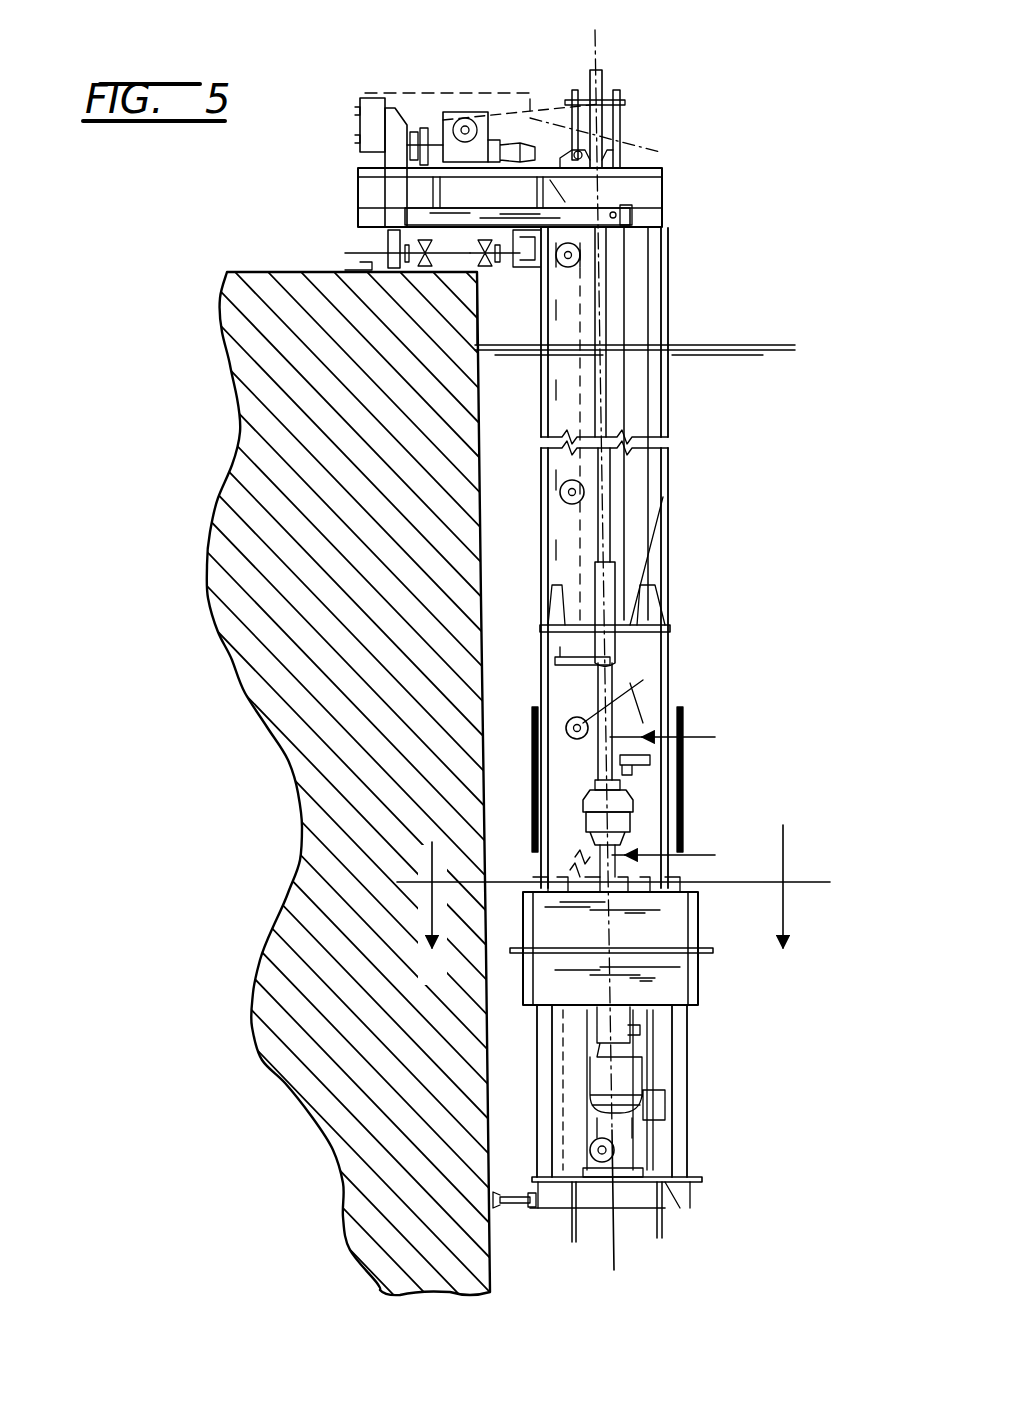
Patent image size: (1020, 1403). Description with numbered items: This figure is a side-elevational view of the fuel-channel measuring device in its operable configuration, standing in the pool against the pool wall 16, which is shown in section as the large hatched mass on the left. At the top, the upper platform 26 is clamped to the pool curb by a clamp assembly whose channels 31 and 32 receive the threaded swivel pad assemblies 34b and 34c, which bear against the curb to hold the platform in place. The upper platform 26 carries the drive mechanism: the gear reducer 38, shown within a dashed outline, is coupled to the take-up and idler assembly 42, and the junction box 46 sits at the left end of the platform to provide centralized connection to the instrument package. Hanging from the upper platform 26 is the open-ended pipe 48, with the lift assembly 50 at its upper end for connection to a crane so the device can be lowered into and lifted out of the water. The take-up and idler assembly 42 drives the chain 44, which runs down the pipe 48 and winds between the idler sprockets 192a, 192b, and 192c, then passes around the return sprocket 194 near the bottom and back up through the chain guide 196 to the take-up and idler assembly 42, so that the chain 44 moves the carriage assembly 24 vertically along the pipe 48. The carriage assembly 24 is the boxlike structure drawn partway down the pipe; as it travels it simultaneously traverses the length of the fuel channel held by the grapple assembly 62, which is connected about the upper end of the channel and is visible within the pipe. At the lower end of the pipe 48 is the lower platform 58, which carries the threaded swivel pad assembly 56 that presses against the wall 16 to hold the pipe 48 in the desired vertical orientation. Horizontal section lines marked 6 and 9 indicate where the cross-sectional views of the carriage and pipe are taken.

The wall 16 is at (495, 1272).
The carriage assembly 24 is at (705, 1003).
The upper platform 26 is at (668, 190).
The channel 31 is at (397, 236).
The channel 32 is at (533, 268).
The threaded swivel pad assembly 34b is at (385, 256).
The threaded swivel pad assembly 34c is at (484, 265).
The gear reducer 38 is at (465, 90).
The take-up and idler assembly 42 is at (497, 97).
The chain 44 is at (578, 392).
The junction box 46 is at (358, 122).
The pipe 48 is at (668, 572).
The lift assembly 50 is at (630, 82).
The threaded swivel pad assembly 56 is at (492, 1195).
The lower platform 58 is at (668, 1210).
The grapple assembly 62 is at (620, 795).
The idler sprocket 192a is at (580, 264).
The idler sprocket 192b is at (584, 492).
The idler sprocket 192c is at (588, 718).
The return sprocket 194 is at (612, 1150).
The chain guide 196 is at (620, 380).
The section line 6- 6 is at (613, 905).
The section line 9- 9 is at (668, 776).